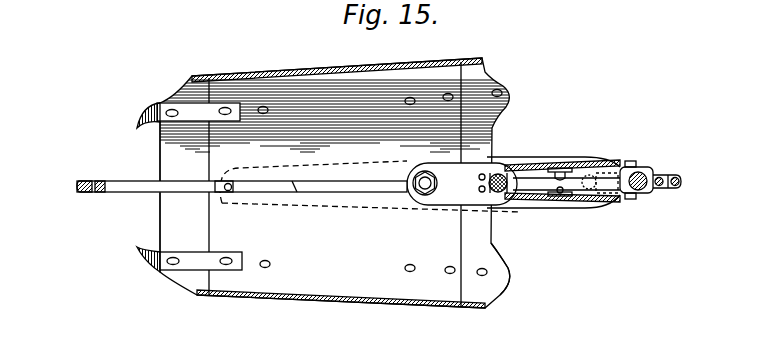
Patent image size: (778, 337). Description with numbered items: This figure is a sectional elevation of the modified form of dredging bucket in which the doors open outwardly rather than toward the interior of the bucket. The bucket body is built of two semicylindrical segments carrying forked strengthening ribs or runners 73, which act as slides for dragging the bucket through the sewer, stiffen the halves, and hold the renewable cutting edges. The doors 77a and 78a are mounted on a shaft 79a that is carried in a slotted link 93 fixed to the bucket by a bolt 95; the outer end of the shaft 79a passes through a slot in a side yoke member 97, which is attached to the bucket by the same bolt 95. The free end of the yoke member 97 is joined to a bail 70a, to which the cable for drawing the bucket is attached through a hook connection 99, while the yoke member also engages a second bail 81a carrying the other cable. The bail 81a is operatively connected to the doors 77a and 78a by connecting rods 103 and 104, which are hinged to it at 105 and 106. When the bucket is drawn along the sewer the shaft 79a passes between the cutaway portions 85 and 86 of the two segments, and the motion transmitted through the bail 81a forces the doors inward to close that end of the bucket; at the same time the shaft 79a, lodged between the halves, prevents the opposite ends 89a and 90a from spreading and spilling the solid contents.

The strengthening ribs or runners 73 is at (155, 106).
The opposite end of bucket segment 89a is at (162, 165).
The opposite end of bucket segment 90a is at (168, 219).
The bail 70a is at (78, 188).
The hook connection 99 is at (232, 193).
The slotted link 93 is at (432, 208).
The bolt 95 is at (412, 174).
The side yoke member 97 is at (503, 158).
The cutaway portion 85 is at (484, 176).
The cutaway portion 86 is at (472, 192).
The door 77a is at (565, 167).
The door 78a is at (592, 201).
The connecting rod 104 is at (608, 162).
The connecting rod 103 is at (613, 188).
The bail 81a is at (645, 175).
The hinge connection 106 is at (559, 172).
The hinge connection 105 is at (560, 194).
The shaft 79a is at (503, 210).